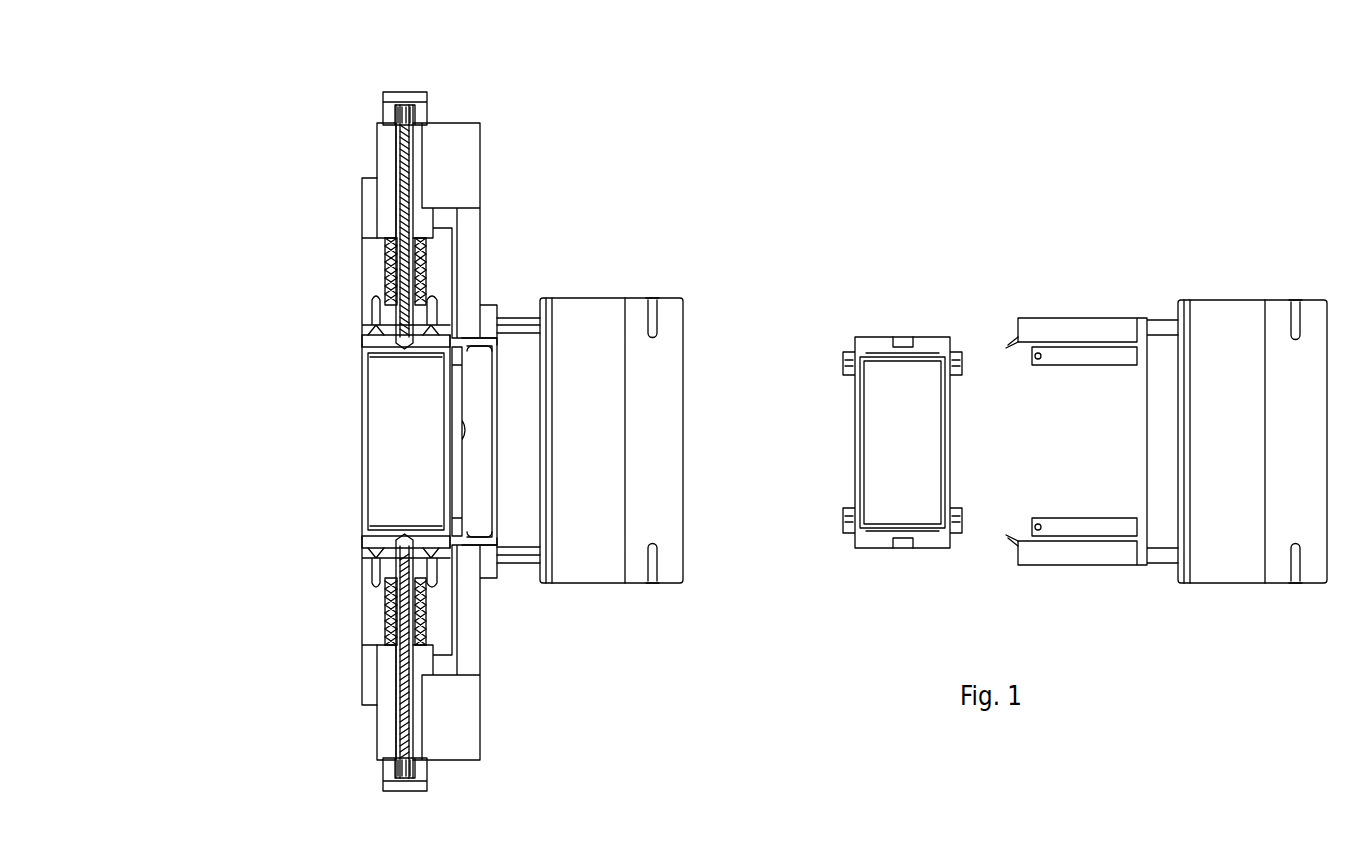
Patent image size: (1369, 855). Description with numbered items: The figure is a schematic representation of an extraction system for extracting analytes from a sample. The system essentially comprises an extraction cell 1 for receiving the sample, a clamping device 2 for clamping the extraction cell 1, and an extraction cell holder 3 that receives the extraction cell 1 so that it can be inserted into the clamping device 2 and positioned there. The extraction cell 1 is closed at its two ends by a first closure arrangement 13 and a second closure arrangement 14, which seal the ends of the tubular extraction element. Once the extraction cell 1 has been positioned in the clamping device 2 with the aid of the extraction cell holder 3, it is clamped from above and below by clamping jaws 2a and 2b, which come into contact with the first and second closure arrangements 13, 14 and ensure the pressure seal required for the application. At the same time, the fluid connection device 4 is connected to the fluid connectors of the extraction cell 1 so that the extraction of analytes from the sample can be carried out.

The extraction cell 1 is at (290, 426).
The clamping device 2 is at (361, 407).
The clamping jaw 2a is at (360, 278).
The clamping jaw 2b is at (367, 608).
The extraction cell holder 3 is at (611, 250).
The fluid connection device 4 is at (403, 238).
The first closure arrangement 13 is at (365, 345).
The second closure arrangement 14 is at (364, 542).